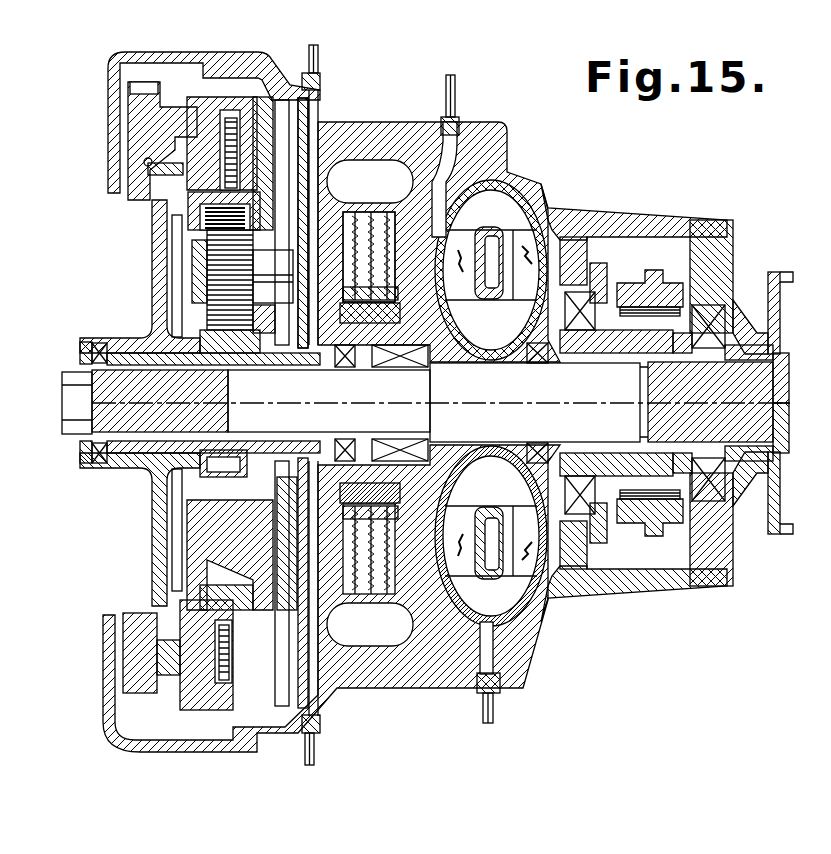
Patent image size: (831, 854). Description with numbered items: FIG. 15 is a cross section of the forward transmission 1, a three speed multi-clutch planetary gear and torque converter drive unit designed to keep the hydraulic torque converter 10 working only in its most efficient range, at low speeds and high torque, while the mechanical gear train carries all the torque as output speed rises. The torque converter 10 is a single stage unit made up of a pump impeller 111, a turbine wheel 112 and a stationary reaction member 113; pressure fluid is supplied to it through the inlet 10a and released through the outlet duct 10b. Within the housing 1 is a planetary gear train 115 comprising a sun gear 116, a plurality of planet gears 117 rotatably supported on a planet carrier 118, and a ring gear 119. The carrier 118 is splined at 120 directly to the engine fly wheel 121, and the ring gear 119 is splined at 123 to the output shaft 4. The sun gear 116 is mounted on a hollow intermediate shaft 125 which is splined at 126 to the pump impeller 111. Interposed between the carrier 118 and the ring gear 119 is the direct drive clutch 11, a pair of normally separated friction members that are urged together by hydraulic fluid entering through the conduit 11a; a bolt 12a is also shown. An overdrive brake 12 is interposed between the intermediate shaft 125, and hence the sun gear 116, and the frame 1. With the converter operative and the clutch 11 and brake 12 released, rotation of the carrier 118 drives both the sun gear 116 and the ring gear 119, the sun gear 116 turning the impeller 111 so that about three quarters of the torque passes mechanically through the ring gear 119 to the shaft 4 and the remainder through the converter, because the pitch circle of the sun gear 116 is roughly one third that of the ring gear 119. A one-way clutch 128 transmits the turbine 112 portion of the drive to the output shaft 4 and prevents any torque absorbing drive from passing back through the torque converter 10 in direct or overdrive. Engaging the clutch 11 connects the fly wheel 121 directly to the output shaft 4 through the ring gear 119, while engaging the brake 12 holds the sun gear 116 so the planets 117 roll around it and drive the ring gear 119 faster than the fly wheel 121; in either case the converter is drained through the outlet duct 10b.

The forward transmission 1 is at (74, 461).
The output shaft 4 is at (500, 394).
The hydraulic torque converter 10 is at (542, 178).
The inlet 10a is at (457, 103).
The outlet duct 10b is at (497, 703).
The direct drive clutch 11 is at (195, 715).
The conduit 11a is at (320, 738).
The overdrive brake 12 is at (362, 197).
The bolt 12a is at (320, 58).
The pump impeller 111 is at (590, 216).
The turbine wheel 112 is at (540, 212).
The stationary reaction member 113 is at (460, 225).
The planetary gear train 115 is at (148, 290).
The sun gear 116 is at (205, 345).
The planet gears 117 is at (217, 254).
The planet carrier 118 is at (300, 122).
The ring gear 119 is at (190, 208).
The spline 120 is at (148, 174).
The engine fly wheel 121 is at (138, 120).
The spline 123 is at (82, 355).
The hollow intermediate shaft 125 is at (290, 368).
The spline 126 is at (400, 325).
The one-way clutch 128 is at (630, 288).